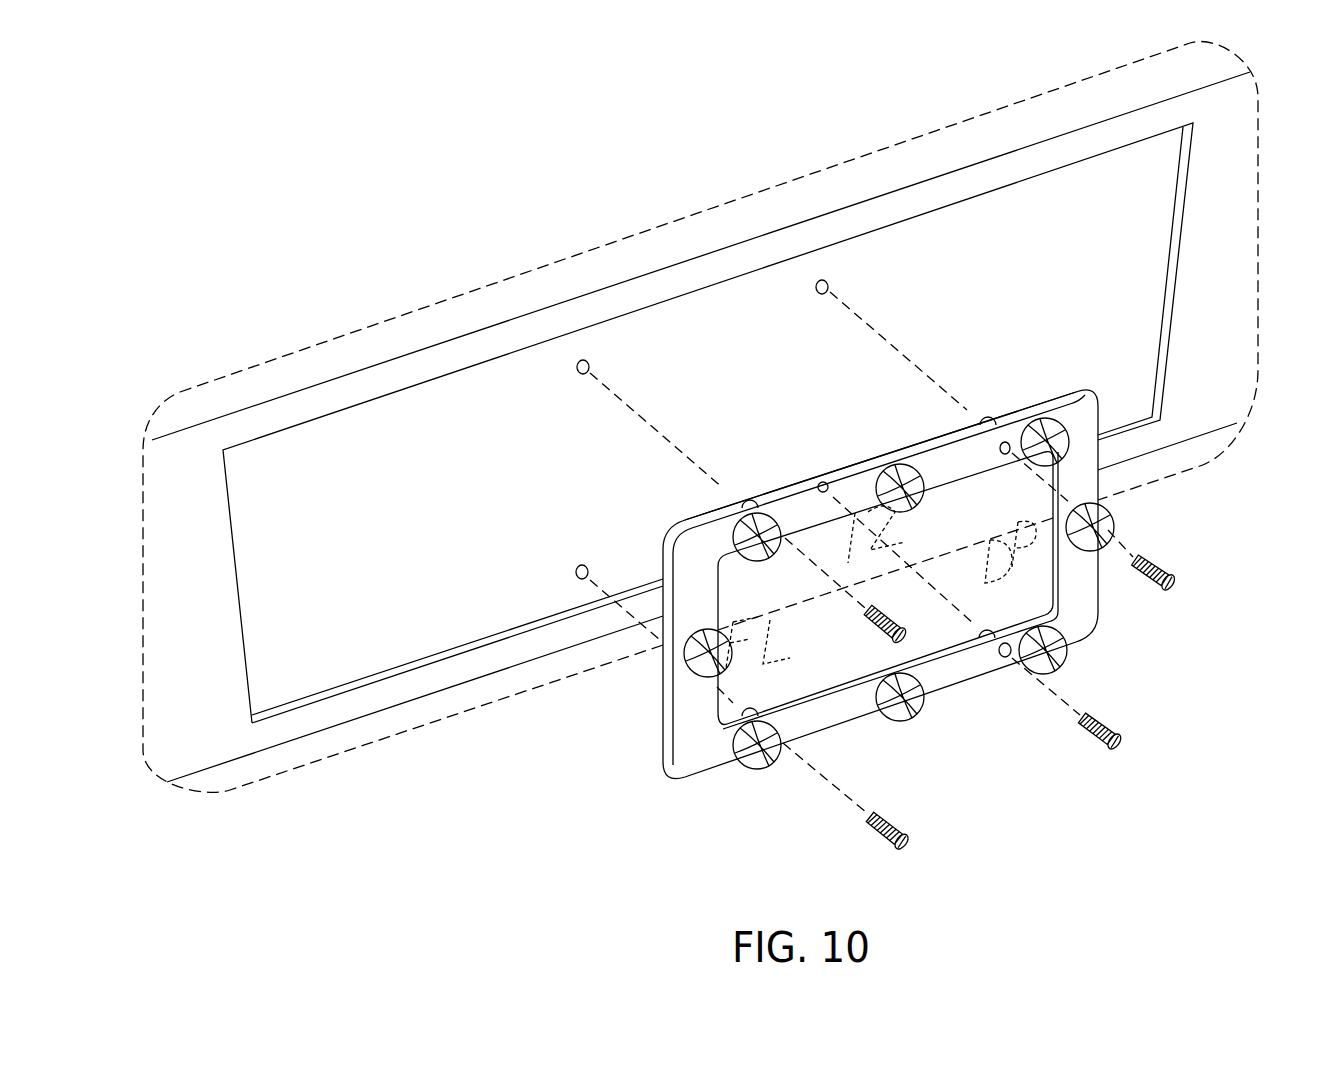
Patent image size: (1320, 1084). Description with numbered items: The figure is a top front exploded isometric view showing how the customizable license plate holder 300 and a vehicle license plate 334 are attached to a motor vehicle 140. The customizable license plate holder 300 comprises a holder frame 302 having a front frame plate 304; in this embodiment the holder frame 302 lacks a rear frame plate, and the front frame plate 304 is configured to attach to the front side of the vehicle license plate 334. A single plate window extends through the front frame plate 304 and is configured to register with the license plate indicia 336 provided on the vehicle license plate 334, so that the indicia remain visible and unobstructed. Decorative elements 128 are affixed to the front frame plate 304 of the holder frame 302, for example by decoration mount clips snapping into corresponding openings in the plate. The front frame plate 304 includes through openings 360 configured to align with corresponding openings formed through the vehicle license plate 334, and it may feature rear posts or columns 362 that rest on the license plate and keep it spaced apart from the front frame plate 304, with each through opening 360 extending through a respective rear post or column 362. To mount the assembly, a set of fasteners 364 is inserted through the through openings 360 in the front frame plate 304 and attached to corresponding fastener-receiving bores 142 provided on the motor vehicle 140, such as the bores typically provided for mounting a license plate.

The motor vehicle 140 is at (497, 320).
The fastener-receiving bores 142 is at (830, 285).
The decorative element 128 is at (1067, 660).
The customizable license plate holder 300 is at (953, 712).
The holder frame 302 is at (857, 727).
The front frame plate 304 is at (965, 670).
The vehicle license plate 334 is at (900, 440).
The license plate indicia 336 is at (1032, 548).
The through openings 360 is at (1005, 455).
The rear posts or columns 362 is at (990, 420).
The fasteners 364 is at (1167, 567).